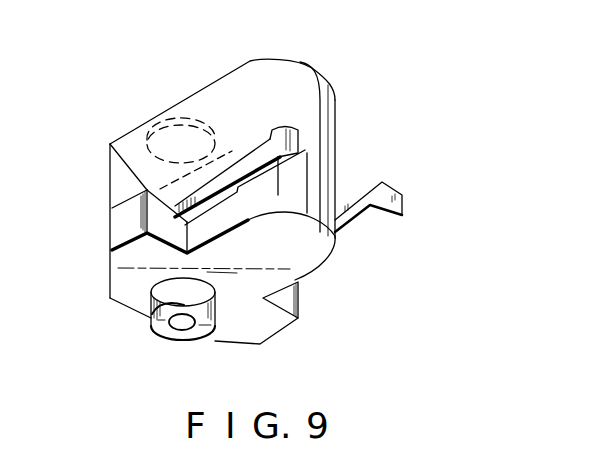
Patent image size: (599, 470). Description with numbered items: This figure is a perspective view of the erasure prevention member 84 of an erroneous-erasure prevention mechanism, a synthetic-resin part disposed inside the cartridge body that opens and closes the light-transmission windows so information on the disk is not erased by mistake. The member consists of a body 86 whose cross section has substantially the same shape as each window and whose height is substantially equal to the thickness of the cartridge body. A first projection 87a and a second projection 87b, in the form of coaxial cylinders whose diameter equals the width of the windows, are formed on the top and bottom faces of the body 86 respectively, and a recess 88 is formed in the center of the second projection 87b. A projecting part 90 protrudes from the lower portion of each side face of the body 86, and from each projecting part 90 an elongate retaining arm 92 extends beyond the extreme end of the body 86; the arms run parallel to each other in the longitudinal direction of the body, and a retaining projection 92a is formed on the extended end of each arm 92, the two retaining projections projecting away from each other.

The erasure prevention member 84 is at (347, 92).
The body 86 is at (238, 86).
The first projection 87a is at (173, 132).
The second projection 87b is at (215, 327).
The recess 88 is at (153, 325).
The projecting part 90 is at (112, 229).
The retaining arm 92 is at (250, 168).
The retaining projection 92a is at (275, 132).